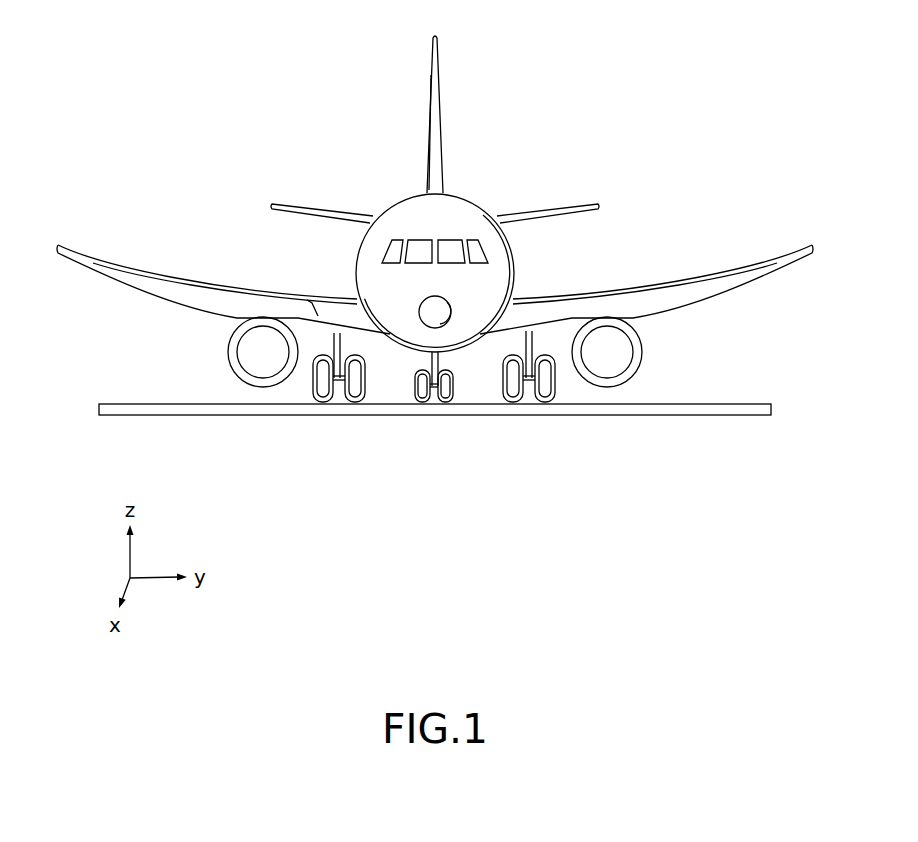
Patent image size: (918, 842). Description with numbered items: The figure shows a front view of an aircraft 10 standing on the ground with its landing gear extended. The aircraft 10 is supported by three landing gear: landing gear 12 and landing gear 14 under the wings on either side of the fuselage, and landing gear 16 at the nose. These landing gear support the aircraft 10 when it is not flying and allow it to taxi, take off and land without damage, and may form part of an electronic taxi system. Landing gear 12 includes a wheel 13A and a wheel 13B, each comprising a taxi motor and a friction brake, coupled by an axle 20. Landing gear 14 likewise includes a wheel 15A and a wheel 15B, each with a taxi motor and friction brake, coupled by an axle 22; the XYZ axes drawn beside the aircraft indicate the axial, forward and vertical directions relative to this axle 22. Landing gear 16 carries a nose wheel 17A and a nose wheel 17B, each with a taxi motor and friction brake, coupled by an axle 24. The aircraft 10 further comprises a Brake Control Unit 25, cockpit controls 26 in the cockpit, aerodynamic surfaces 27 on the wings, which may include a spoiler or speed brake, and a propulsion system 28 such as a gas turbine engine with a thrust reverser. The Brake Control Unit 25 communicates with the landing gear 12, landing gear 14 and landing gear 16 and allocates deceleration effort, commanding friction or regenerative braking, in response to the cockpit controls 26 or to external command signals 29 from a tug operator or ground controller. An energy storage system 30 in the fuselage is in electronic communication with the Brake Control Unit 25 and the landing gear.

The aircraft 10 is at (302, 122).
The landing gear 12 is at (570, 386).
The landing gear 14 is at (327, 438).
The wheel 15A is at (321, 401).
The wheel 15B is at (360, 401).
The landing gear 16 is at (479, 402).
The nose wheel 17A is at (465, 401).
The nose wheel 17B is at (413, 401).
The axle 20 is at (565, 372).
The wheel 13A is at (573, 401).
The wheel 13B is at (522, 355).
The axle 22 is at (340, 401).
The axle 24 is at (432, 401).
The brake control unit 25 is at (407, 313).
The cockpit controls 26 is at (388, 250).
The aerodynamic surfaces 27 is at (677, 292).
The propulsion system 28 is at (643, 347).
The external command signals 29 is at (556, 182).
The energy storage system 30 is at (307, 299).